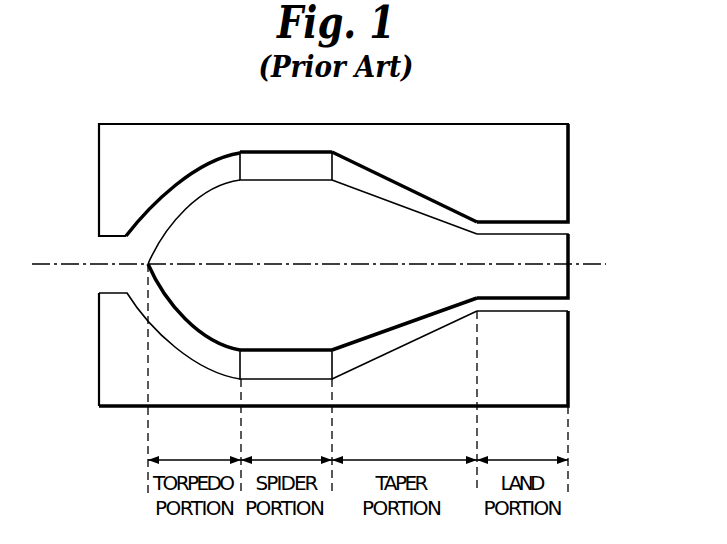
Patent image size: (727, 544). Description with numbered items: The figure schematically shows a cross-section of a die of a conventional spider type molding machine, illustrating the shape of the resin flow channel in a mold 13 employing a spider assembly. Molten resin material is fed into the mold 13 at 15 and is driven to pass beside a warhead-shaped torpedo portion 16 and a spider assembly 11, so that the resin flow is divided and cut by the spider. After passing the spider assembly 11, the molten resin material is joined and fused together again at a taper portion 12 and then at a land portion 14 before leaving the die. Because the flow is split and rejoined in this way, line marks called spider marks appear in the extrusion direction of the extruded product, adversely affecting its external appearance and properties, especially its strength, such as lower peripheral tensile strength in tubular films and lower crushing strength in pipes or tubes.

The spider assembly 11 is at (271, 178).
The taper portion 12 is at (453, 227).
The mold 13 is at (501, 181).
The land portion 14 is at (543, 327).
The resin feed point 15 is at (117, 257).
The torpedo portion 16 is at (165, 353).